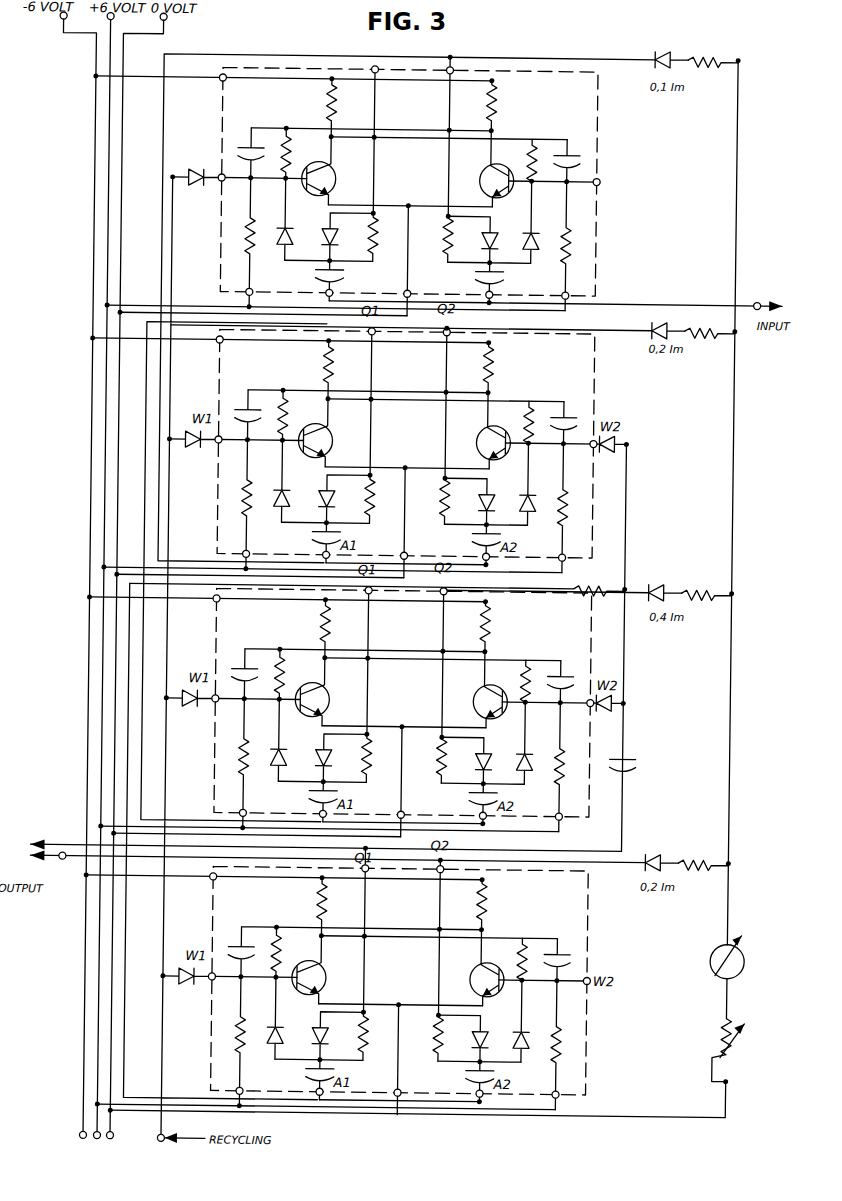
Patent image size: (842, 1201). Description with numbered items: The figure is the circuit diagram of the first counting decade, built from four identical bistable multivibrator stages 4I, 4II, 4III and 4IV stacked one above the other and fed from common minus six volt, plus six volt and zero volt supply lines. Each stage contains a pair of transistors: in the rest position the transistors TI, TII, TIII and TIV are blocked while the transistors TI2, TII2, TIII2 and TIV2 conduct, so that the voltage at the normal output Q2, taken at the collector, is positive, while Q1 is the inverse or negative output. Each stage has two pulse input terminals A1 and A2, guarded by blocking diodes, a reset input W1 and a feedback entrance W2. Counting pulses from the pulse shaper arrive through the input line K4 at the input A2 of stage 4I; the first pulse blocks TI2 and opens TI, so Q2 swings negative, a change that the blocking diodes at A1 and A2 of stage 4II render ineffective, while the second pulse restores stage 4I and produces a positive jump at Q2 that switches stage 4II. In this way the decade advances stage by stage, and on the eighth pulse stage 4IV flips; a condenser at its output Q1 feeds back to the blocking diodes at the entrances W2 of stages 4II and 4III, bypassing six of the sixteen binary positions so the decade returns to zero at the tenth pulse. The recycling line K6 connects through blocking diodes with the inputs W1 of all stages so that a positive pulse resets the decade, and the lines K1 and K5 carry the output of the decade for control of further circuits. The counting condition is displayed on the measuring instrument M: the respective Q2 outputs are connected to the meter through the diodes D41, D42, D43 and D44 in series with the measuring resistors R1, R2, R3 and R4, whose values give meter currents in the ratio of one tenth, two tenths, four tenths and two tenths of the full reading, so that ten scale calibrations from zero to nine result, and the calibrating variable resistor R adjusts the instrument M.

The diode D41 is at (668, 48).
The measuring resistor R1 is at (714, 50).
The diode D42 is at (660, 320).
The measuring resistor R2 is at (698, 322).
The diode D43 is at (658, 582).
The measuring resistor R3 is at (702, 582).
The diode D44 is at (658, 852).
The measuring resistor R4 is at (702, 852).
The measuring instrument M is at (757, 954).
The calibrating variable resistor R is at (728, 1028).
The line K1 is at (328, 646).
The line K4 is at (637, 296).
The line K5 is at (337, 868).
The line K6 is at (164, 1143).
The bistable multivibrator stage 4I is at (583, 120).
The bistable multivibrator stage 4II is at (603, 392).
The bistable multivibrator stage 4III is at (601, 651).
The bistable multivibrator stage 4IV is at (599, 929).
The inverse output Q1 is at (372, 151).
The normal output Q2 is at (448, 150).
The input W1 is at (238, 168).
The input W2 is at (566, 182).
The input terminal A1 is at (338, 281).
The input terminal A2 is at (498, 284).
The transistor TI is at (332, 168).
The transistor TI2 is at (486, 166).
The transistor TII is at (322, 432).
The transistor TII2 is at (480, 430).
The transistor TIII is at (321, 691).
The transistor TIII2 is at (477, 689).
The transistor TIV is at (319, 969).
The transistor TIV2 is at (474, 967).